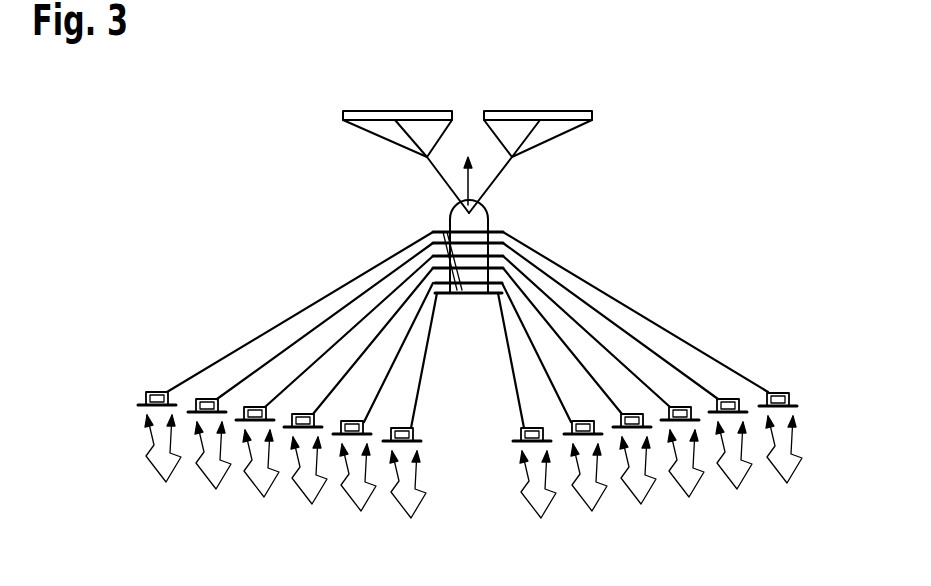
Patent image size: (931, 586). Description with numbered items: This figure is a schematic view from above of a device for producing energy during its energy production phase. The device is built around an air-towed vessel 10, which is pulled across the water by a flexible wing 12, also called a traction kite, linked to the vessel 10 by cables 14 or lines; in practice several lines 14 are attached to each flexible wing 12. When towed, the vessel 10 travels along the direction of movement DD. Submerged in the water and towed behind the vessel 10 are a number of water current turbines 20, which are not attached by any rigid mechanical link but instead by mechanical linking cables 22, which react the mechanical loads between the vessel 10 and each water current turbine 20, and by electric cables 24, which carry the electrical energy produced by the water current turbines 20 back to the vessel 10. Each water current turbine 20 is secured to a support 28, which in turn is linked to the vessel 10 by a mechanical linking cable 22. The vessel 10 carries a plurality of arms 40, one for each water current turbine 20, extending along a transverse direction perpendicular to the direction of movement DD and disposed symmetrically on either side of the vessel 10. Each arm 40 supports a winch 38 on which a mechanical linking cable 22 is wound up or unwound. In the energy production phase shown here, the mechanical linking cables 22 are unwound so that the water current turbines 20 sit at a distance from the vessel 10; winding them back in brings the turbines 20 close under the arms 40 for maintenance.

The air-towed vessel 10 is at (496, 206).
The flexible wing 12 is at (362, 104).
The cable 14 is at (516, 163).
The water current turbine 20 is at (473, 482).
The mechanical linking cable 22 is at (467, 293).
The electric cable 24 is at (410, 315).
The support 28 is at (246, 395).
The winch 38 is at (430, 266).
The arm 40 is at (492, 294).
The direction of movement DD is at (470, 180).